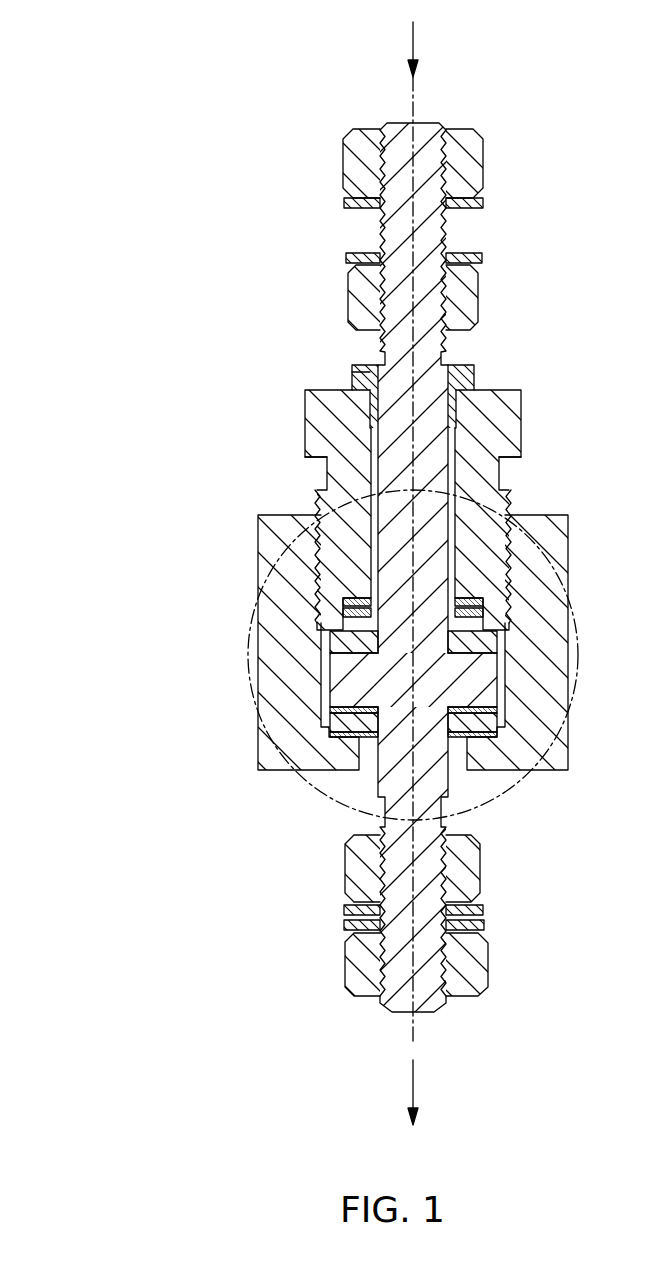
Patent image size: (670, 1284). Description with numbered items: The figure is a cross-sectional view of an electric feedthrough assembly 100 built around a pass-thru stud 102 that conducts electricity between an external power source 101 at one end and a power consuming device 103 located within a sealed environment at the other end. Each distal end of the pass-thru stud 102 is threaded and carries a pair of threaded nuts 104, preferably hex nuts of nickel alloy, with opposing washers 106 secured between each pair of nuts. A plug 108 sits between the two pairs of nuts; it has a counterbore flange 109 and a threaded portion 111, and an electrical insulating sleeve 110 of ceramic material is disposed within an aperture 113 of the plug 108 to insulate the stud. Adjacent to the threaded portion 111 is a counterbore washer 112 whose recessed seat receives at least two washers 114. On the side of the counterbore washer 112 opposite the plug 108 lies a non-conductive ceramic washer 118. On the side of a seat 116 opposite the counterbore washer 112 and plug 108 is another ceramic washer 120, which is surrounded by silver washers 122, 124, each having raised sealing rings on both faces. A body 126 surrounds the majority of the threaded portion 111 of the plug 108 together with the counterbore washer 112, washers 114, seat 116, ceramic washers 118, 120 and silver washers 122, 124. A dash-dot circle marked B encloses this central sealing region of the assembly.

The electric feedthrough assembly 100 is at (84, 86).
The external power source 101 is at (416, 40).
The pass-thru stud 102 is at (440, 126).
The power consuming device 103 is at (418, 1082).
The threaded nuts 104 is at (484, 166).
The washers 106 is at (346, 203).
The plug 108 is at (522, 412).
The counterbore flange 109 is at (515, 456).
The electrical insulating sleeve 110 is at (478, 374).
The threaded portion 111 is at (318, 498).
The counterbore washer 112 is at (337, 621).
The aperture 113 is at (356, 379).
The washers 114 is at (350, 604).
The seat 116 is at (490, 692).
The ceramic washer 118 is at (337, 649).
The ceramic washer 120 is at (350, 724).
The silver washer 122 is at (496, 709).
The silver washer 124 is at (500, 731).
The body 126 is at (263, 553).
The detail region B is at (241, 636).